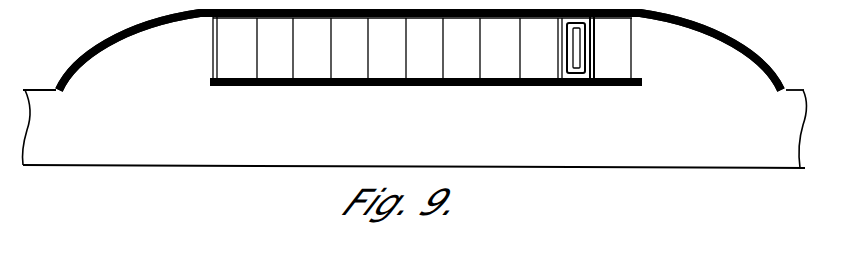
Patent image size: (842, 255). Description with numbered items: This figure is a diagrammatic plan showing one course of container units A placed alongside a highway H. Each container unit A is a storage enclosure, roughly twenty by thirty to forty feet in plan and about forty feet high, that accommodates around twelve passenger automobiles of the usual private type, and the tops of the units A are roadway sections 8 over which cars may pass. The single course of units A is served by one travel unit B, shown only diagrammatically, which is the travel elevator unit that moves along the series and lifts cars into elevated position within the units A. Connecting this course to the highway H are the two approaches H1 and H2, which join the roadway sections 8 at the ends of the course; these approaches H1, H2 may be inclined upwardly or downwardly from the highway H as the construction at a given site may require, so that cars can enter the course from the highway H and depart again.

The highway H is at (45, 150).
The approach H1 is at (143, 43).
The approach H2 is at (708, 47).
The container unit A is at (243, 68).
The travel unit B is at (578, 50).
The roadway section 8 is at (368, 50).